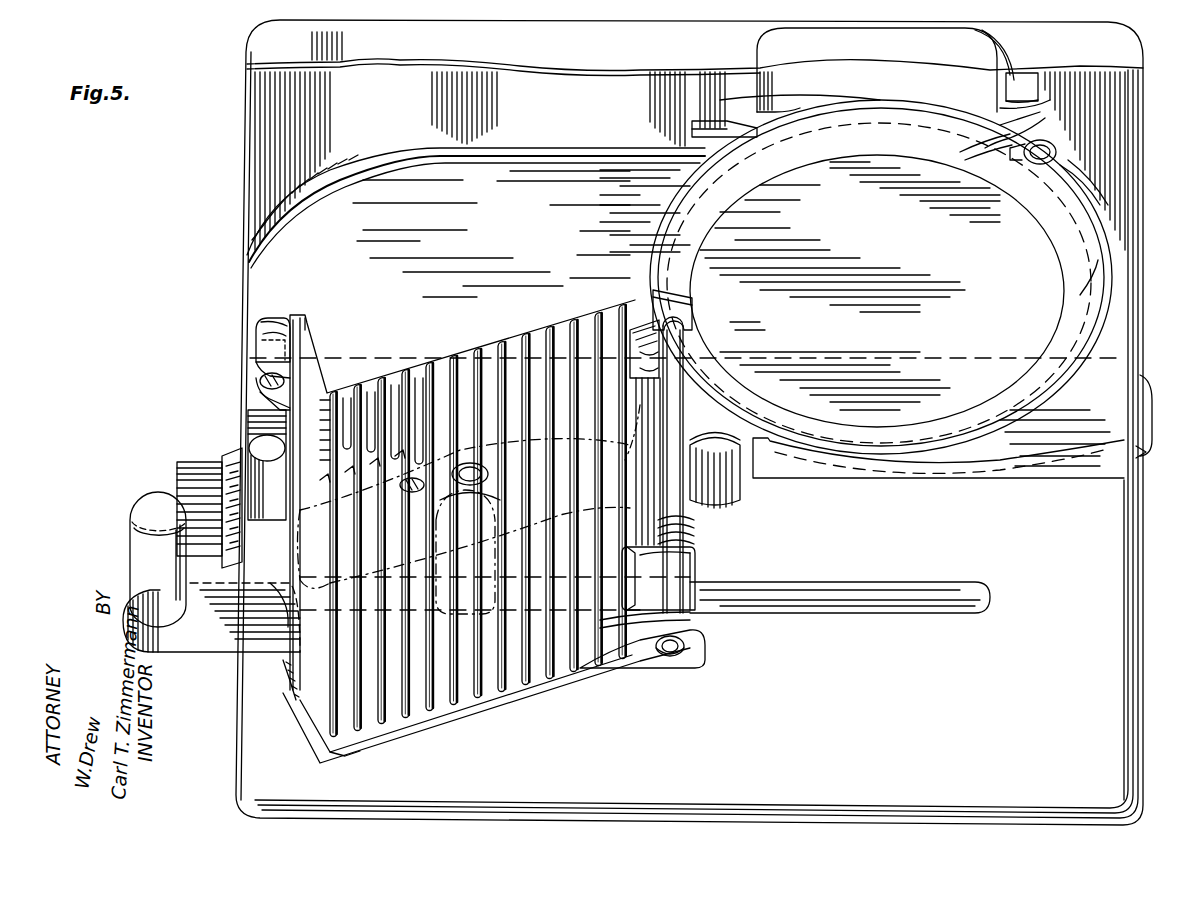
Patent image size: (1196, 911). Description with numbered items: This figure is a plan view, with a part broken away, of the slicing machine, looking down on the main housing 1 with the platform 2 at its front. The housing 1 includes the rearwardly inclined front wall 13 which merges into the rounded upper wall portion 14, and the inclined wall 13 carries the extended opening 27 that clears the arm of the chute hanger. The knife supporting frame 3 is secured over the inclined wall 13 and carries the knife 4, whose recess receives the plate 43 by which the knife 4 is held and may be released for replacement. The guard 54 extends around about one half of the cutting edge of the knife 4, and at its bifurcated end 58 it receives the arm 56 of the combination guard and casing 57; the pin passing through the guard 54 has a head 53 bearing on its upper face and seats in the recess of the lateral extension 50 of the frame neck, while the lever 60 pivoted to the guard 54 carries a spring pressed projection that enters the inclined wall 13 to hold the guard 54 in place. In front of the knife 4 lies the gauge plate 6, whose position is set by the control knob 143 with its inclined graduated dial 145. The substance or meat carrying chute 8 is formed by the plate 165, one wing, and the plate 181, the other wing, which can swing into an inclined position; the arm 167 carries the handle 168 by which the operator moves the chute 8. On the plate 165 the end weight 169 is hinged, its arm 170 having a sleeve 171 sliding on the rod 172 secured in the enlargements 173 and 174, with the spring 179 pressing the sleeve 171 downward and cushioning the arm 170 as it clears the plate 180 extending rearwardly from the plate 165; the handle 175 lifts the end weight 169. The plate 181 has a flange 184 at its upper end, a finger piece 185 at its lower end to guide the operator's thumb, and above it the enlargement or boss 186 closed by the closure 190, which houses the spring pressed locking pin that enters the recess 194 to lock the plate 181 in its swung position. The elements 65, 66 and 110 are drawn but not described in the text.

The main housing 1 is at (1148, 680).
The platform 2 is at (255, 143).
The knife supporting frame 3 is at (1114, 250).
The knife 4 is at (1082, 297).
The gauge plate 6 is at (258, 246).
The substance or meat carrying chute 8 is at (630, 662).
The rearwardly inclined front wall 13 is at (880, 524).
The rounded upper wall portion 14 is at (1095, 622).
The extended opening 27 is at (893, 604).
The plate 43 is at (904, 232).
The lateral extension 50 is at (1030, 80).
The head 53 is at (1055, 156).
The guard 54 is at (1090, 192).
The arm 56 is at (962, 142).
The combination guard and casing 57 is at (990, 46).
The bifurcated end 58 is at (1005, 156).
The lever 60 is at (1146, 452).
The ring bevel 65 is at (878, 150).
The viewfinder housing 66 is at (898, 48).
The adjusting knob 110 is at (255, 442).
The control knob 143 is at (177, 462).
The inclined graduated dial 145 is at (228, 458).
The plate 165 is at (500, 690).
The arm 167 is at (192, 642).
The handle 168 is at (138, 508).
The end weight 169 is at (368, 466).
The arm 170 is at (622, 422).
The sleeve 171 is at (694, 562).
The rod 172 is at (700, 500).
The enlargement 173 is at (688, 644).
The enlargement 174 is at (693, 312).
The handle 175 is at (565, 545).
The spring 179 is at (693, 606).
The plate 180 is at (655, 416).
The plate 181 is at (290, 705).
The flange 184 is at (360, 745).
The finger piece 185 is at (268, 342).
The enlargement or boss 186 is at (262, 370).
The closure 190 is at (262, 384).
The recess 194 is at (418, 478).